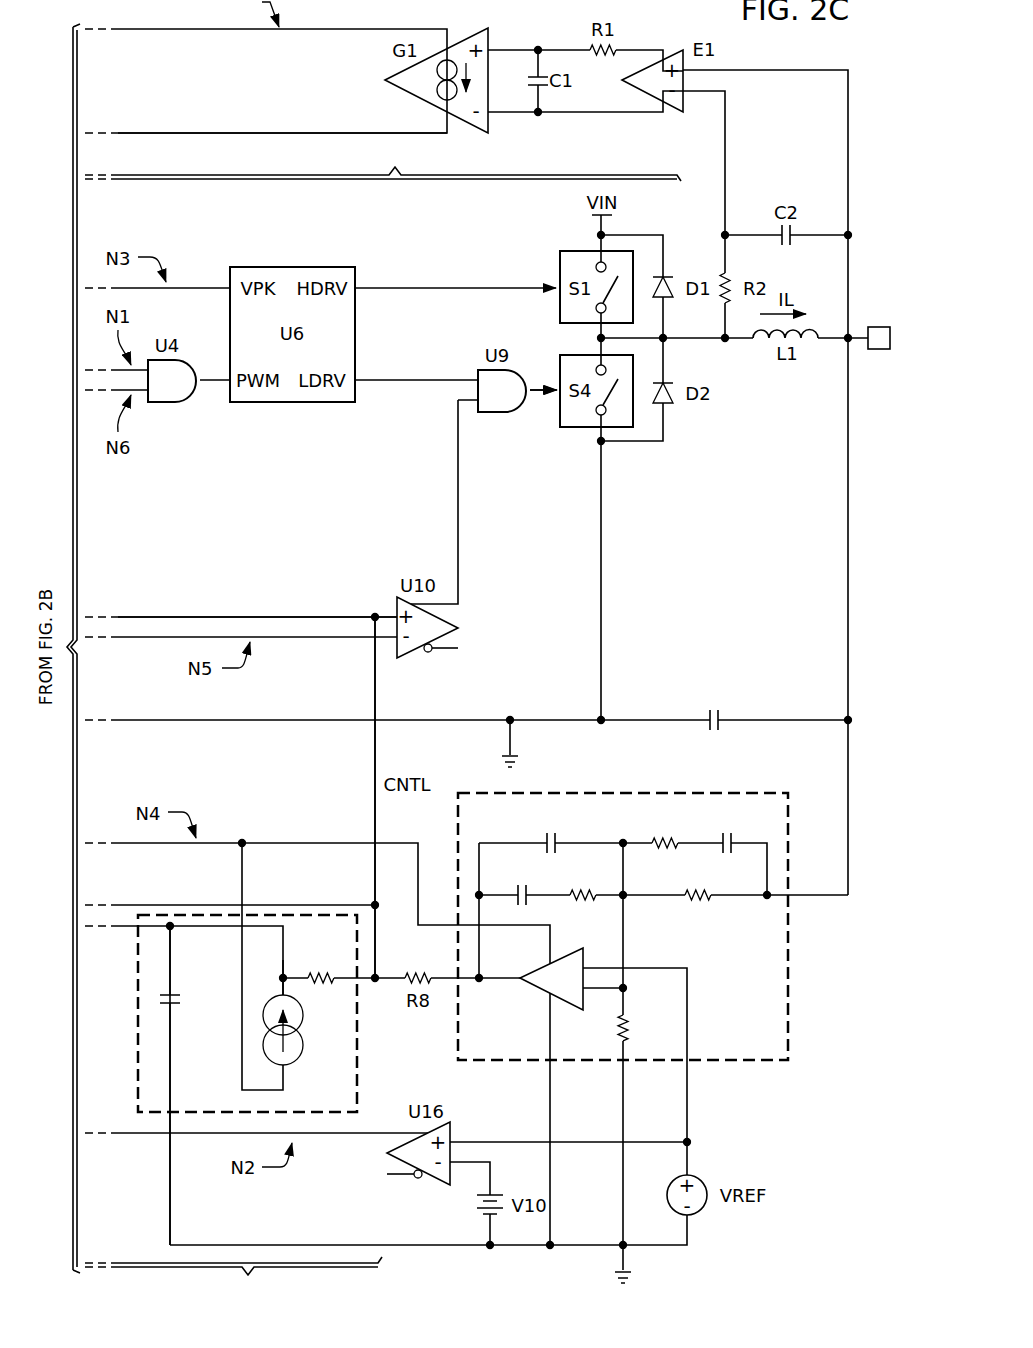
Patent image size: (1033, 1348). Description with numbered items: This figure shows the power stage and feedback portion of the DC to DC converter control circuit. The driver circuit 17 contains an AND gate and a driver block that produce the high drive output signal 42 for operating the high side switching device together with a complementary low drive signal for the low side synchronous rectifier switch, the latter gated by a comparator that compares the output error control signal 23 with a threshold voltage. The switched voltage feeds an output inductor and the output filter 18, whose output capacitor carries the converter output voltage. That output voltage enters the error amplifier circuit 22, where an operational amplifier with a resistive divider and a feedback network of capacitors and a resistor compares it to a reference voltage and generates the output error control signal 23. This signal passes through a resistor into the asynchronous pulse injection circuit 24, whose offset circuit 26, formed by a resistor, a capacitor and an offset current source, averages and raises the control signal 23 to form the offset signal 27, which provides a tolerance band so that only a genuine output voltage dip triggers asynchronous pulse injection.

The driver circuit 17 is at (399, 160).
The output filter 18 is at (755, 707).
The error amplifier circuit 22 is at (793, 985).
The output error control signal 23 is at (283, 133).
The asynchronous pulse injection circuit 24 is at (250, 1280).
The offset circuit 26 is at (362, 1029).
The offset signal 27 is at (286, 953).
The high drive output signal 42 is at (457, 291).